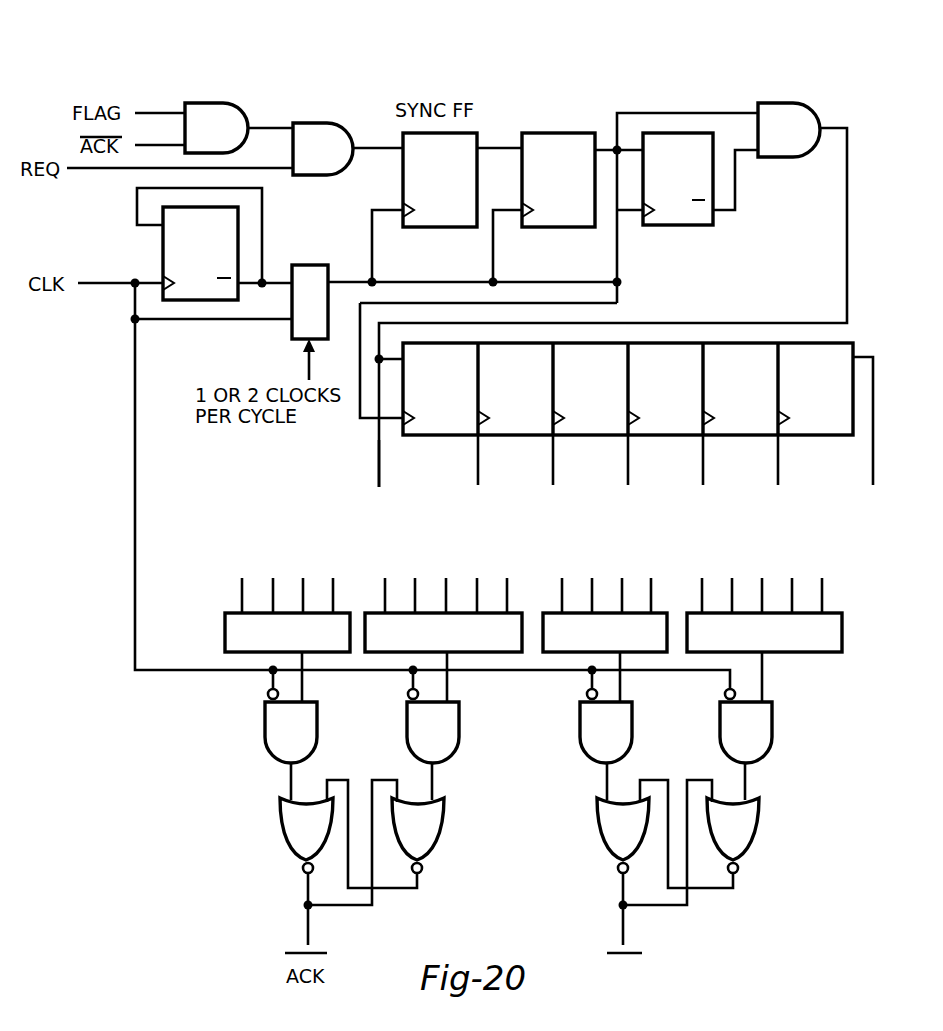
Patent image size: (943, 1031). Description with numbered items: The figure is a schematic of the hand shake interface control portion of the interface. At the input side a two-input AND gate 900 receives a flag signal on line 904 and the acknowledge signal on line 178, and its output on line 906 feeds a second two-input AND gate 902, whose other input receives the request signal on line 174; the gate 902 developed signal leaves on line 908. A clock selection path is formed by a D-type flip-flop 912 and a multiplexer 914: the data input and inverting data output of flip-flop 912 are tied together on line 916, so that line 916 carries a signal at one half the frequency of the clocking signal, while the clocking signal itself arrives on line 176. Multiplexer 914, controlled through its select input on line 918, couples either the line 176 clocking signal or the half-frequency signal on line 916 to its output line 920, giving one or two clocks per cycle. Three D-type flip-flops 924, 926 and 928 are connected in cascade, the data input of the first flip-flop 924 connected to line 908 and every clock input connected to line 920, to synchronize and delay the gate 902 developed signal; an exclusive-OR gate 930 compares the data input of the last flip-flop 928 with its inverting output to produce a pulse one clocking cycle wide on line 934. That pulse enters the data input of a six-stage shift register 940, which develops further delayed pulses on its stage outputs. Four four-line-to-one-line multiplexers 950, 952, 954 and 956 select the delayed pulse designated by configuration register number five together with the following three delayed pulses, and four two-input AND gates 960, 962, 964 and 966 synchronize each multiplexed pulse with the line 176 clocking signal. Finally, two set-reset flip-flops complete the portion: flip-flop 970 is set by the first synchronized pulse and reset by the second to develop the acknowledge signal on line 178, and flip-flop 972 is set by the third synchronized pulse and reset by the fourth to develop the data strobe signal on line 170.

The data strobe line 170 is at (620, 928).
The request line 174 is at (118, 172).
The clocking signal line 176 is at (134, 388).
The acknowledge line 178 is at (143, 145).
The two-input AND gate 900 is at (238, 139).
The two-input AND gate 902 is at (344, 160).
The flag signal line 904 is at (172, 113).
The gate output line 906 is at (264, 128).
The synchronizer input line 908 is at (363, 148).
The D-type flip-flop 912 is at (220, 263).
The multiplexer 914 is at (303, 265).
The half-frequency signal line 916 is at (137, 204).
The select input line 918 is at (306, 366).
The multiplexer output line 920 is at (410, 282).
The first D-type flip-flop 924 is at (458, 188).
The second D-type flip-flop 926 is at (578, 188).
The third D-type flip-flop 928 is at (696, 186).
The exclusive-OR gate 930 is at (806, 136).
The gate output line 934 is at (378, 468).
The six-stage shift register 940 is at (658, 319).
The four-line-to-one-line multiplexer 950 is at (225, 620).
The four-line-to-one-line multiplexer 952 is at (365, 620).
The four-line-to-one-line multiplexer 954 is at (543, 620).
The four-line-to-one-line multiplexer 956 is at (687, 620).
The two-input AND gate 960 is at (312, 736).
The two-input AND gate 962 is at (453, 736).
The two-input AND gate 964 is at (627, 736).
The two-input AND gate 966 is at (767, 736).
The set-reset flip-flop 970 is at (443, 847).
The set-reset flip-flop 972 is at (757, 847).